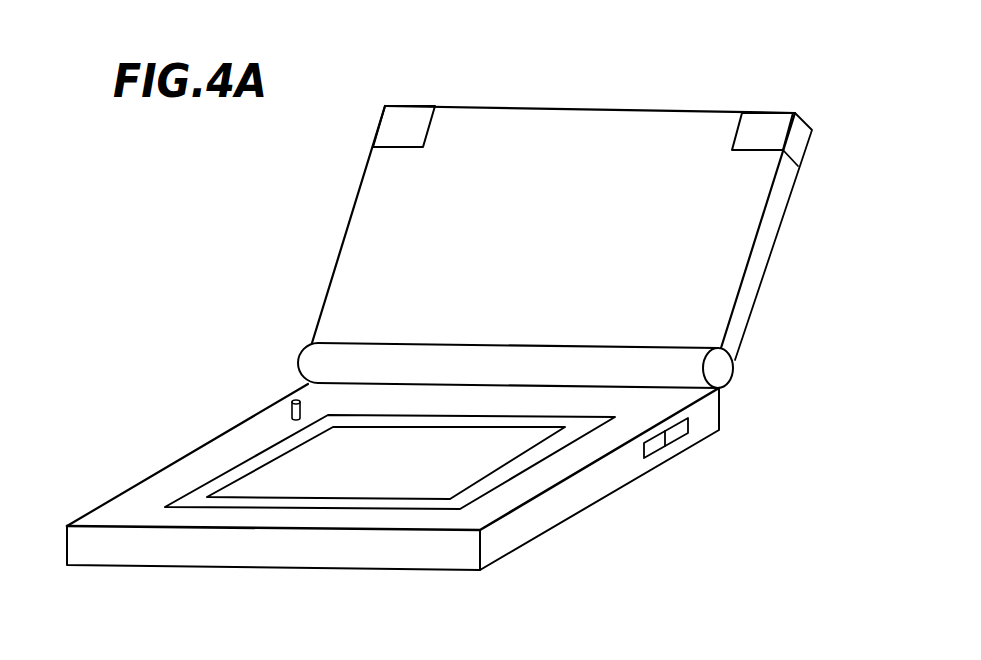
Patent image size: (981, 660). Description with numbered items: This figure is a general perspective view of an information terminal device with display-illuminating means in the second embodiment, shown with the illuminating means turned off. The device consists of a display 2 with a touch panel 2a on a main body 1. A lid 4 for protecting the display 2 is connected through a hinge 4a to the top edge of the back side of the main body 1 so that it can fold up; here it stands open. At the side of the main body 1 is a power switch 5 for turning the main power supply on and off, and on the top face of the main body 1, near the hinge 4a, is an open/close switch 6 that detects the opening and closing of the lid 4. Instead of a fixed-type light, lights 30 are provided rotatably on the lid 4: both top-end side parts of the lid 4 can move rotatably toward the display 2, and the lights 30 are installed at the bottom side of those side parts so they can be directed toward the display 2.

The main body 1 is at (557, 502).
The display 2 is at (275, 503).
The touch panel 2a is at (262, 470).
The lid 4 is at (358, 227).
The hinge 4a is at (722, 368).
The power switch 5 is at (680, 432).
The open/close switch 6 is at (288, 408).
The light 30 is at (757, 125).